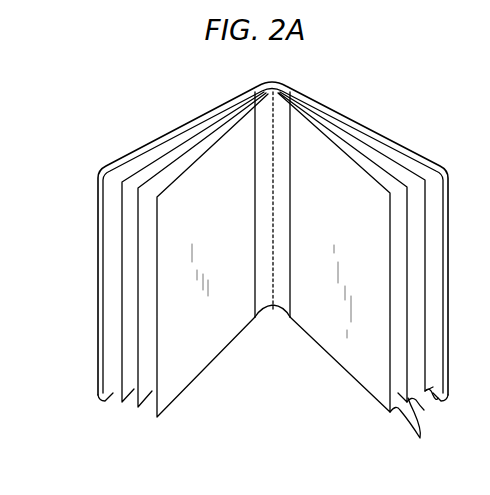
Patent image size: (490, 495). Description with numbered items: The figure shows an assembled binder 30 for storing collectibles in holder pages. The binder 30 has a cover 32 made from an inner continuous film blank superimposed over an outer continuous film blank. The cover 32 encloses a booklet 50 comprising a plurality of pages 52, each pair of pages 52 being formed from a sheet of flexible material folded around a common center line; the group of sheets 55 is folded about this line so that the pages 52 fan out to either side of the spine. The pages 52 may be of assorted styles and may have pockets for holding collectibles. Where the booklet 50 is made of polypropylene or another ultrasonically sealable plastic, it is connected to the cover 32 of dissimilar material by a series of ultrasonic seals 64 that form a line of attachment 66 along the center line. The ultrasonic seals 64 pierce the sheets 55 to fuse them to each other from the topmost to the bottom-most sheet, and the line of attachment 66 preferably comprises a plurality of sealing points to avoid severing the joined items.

The binder 30 is at (66, 252).
The cover 32 is at (180, 125).
The booklet 50 is at (223, 353).
The pages 52 is at (417, 425).
The group of sheets 55 is at (106, 414).
The ultrasonic seals 64 is at (283, 312).
The line of attachment 66 is at (276, 194).